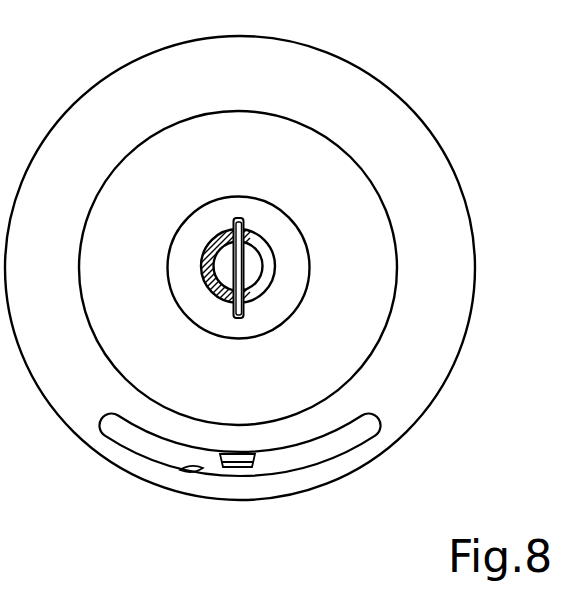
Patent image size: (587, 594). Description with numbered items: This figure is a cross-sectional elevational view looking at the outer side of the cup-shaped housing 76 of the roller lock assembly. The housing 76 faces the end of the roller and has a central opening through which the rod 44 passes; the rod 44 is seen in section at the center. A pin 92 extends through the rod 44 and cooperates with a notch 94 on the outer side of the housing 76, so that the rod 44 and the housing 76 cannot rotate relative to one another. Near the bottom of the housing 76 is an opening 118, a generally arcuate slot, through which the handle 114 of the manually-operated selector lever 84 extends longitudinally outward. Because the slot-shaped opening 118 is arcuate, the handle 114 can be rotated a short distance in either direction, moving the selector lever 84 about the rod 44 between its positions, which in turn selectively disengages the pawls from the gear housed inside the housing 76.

The housing 76 is at (463, 196).
The rod 44 is at (262, 299).
The notch 94 is at (247, 214).
The pin 92 is at (243, 262).
The handle 114 is at (247, 466).
The selector lever 84 is at (235, 467).
The opening 118 is at (202, 469).